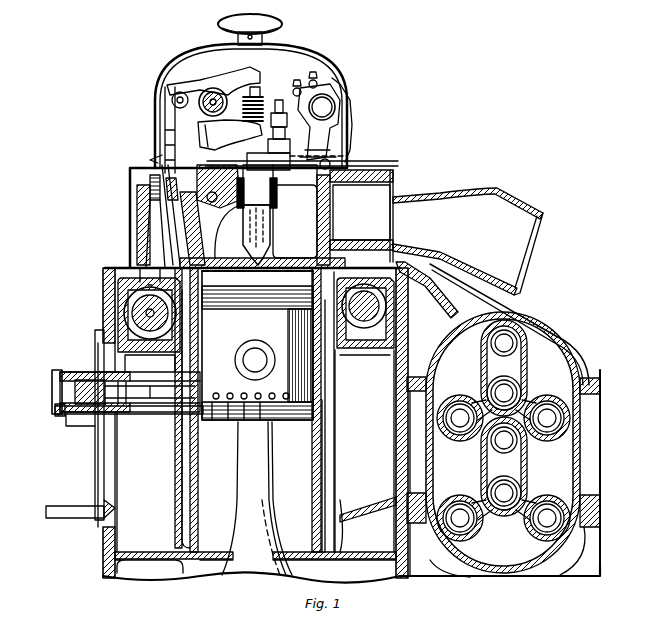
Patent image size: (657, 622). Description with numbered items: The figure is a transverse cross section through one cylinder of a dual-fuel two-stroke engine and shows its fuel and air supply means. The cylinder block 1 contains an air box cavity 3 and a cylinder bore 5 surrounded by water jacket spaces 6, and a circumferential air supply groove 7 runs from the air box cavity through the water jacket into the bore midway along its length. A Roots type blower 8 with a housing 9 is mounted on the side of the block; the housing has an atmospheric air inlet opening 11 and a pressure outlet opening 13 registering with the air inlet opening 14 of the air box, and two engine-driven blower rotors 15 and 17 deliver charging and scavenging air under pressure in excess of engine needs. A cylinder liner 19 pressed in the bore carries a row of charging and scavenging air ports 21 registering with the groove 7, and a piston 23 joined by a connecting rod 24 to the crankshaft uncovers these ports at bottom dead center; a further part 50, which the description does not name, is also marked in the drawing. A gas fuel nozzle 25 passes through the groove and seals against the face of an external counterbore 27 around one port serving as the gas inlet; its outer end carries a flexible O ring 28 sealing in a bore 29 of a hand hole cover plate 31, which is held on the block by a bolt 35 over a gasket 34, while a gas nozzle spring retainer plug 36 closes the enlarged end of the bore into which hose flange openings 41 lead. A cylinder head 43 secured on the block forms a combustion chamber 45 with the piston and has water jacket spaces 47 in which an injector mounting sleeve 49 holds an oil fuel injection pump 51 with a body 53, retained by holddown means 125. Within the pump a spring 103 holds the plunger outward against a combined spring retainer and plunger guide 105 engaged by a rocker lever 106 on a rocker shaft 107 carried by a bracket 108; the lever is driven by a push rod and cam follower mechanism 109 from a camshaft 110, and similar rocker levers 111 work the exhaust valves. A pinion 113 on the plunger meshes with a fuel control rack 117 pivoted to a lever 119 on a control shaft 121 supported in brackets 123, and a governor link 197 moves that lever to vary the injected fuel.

The cylinder block 1 is at (120, 318).
The air box cavity 3 is at (360, 510).
The cylinder bore 5 is at (326, 458).
The water jacket spaces 6 is at (172, 362).
The circumferential air supply groove 7 is at (338, 392).
The blower 8 is at (560, 378).
The housing 9 is at (545, 325).
The atmospheric air inlet opening 11 is at (600, 408).
The pressure outlet opening 13 is at (420, 494).
The air inlet opening 14 is at (394, 402).
The blower rotor 15 is at (470, 395).
The blower rotor 17 is at (472, 490).
The cylinder liner 19 is at (190, 480).
The charging and scavenging air ports 21 is at (244, 420).
The piston 23 is at (292, 426).
The connecting rod 24 is at (268, 510).
The gas fuel nozzle 25 is at (148, 400).
The external counterbore 27 is at (214, 420).
The flexible O ring 28 is at (120, 375).
The bore 29 is at (126, 406).
The hand hole cover plate 31 is at (88, 380).
The gasket 34 is at (94, 505).
The bolt 35 is at (80, 426).
The gas nozzle spring retainer plug 36 is at (52, 384).
The hose flange openings 41 is at (62, 416).
The cylinder head 43 is at (404, 176).
The combustion chamber 45 is at (266, 290).
The water jacket spaces 47 is at (400, 190).
The injector mounting sleeve 49 is at (280, 212).
The valve spring / piston crown 50 is at (246, 274).
The oil fuel injection pump 51 is at (278, 200).
The body 53 is at (372, 192).
The spring 103 is at (309, 84).
The combined spring retainer and plunger guide 105 is at (296, 80).
The rocker lever 106 is at (242, 78).
The rocker shaft 107 is at (212, 86).
The bracket 108 is at (297, 154).
The push rod and cam follower mechanism 109 is at (154, 185).
The camshaft 110 is at (124, 312).
The rocker levers 111 is at (190, 88).
The pinion 113 is at (243, 205).
The fuel control rack 117 is at (230, 135).
The lever 119 is at (342, 124).
The control shaft 121 is at (338, 88).
The brackets 123 is at (338, 150).
The injection pump holddown means 125 is at (150, 160).
The link 197 is at (392, 163).